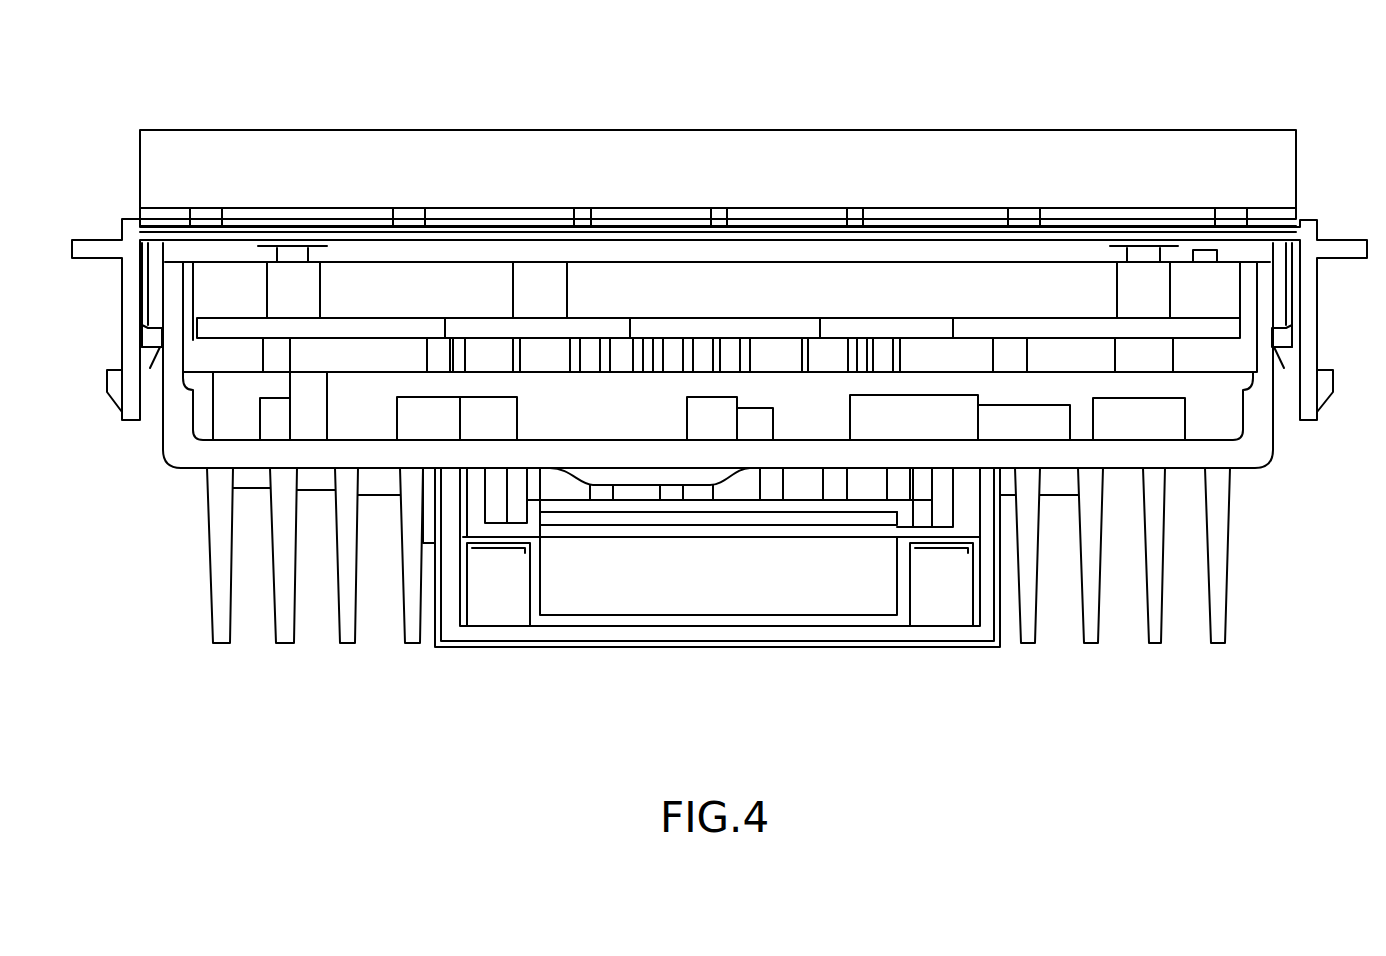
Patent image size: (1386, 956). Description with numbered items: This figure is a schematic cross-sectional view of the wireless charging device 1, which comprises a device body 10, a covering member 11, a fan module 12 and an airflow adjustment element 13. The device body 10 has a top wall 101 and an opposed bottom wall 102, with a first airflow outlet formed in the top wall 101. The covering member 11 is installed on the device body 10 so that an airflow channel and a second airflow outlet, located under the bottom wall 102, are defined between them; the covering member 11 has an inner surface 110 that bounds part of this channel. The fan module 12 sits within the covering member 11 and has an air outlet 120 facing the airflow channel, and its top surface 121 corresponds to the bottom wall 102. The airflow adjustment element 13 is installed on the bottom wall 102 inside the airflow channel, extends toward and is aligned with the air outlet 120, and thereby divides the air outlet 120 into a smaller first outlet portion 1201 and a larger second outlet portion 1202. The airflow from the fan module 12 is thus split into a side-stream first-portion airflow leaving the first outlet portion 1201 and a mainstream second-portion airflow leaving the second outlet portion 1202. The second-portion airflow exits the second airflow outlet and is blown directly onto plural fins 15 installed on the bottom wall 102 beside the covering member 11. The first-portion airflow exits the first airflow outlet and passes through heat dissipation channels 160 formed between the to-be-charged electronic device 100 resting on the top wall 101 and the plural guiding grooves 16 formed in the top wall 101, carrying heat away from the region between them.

The wireless charging device 1 is at (1233, 66).
The device body 10 is at (218, 48).
The top wall 101 is at (178, 235).
The bottom wall 102 is at (717, 385).
The covering member 11 is at (717, 586).
The inner surface 110 is at (503, 612).
The fan module 12 is at (343, 48).
The air outlet 120 is at (648, 415).
The first outlet portion 1201 is at (768, 519).
The second outlet portion 1202 is at (781, 588).
The top surface 121 is at (706, 488).
The airflow adjustment element 13 is at (697, 522).
The fins 15 is at (1230, 550).
The guiding grooves 16 is at (718, 199).
The heat dissipation channels 160 is at (781, 207).
The to-be-charged electronic device 100 is at (1005, 150).